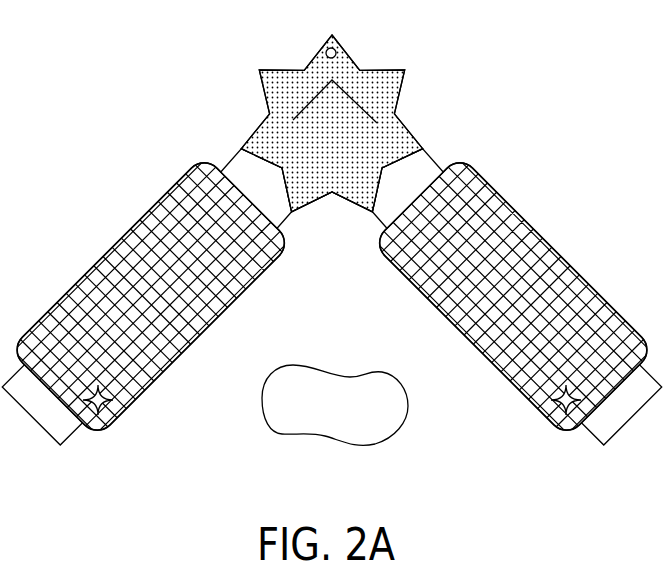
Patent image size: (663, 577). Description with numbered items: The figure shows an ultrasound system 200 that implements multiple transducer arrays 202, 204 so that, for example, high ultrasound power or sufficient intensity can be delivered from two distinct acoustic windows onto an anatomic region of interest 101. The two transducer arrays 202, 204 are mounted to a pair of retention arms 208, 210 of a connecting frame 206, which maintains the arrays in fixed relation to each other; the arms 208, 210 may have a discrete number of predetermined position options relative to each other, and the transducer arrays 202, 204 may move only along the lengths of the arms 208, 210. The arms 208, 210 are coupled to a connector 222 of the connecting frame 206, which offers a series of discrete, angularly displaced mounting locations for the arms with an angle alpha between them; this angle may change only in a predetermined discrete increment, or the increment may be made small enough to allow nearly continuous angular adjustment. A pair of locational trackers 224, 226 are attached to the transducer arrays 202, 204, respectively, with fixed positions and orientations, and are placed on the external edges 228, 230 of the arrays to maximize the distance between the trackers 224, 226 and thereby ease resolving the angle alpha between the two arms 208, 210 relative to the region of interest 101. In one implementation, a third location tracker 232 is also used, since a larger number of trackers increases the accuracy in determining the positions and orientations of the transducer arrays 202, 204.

The system 200 is at (331, 254).
The transducer array 202 is at (117, 245).
The transducer array 204 is at (546, 245).
The connecting frame 206 is at (373, 78).
The retention arm 208 is at (240, 160).
The retention arm 210 is at (433, 160).
The connector 222 is at (331, 180).
The locational tracker 224 is at (97, 414).
The locational tracker 226 is at (567, 414).
The external edge 228 is at (62, 405).
The external edge 230 is at (622, 405).
The location tracker 232 is at (326, 50).
The anatomic region of interest 101 is at (351, 417).